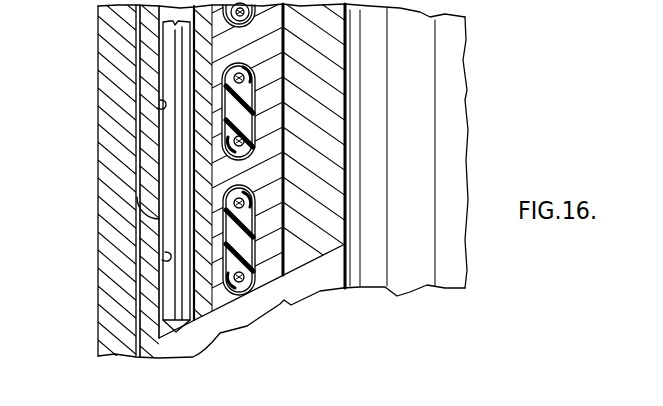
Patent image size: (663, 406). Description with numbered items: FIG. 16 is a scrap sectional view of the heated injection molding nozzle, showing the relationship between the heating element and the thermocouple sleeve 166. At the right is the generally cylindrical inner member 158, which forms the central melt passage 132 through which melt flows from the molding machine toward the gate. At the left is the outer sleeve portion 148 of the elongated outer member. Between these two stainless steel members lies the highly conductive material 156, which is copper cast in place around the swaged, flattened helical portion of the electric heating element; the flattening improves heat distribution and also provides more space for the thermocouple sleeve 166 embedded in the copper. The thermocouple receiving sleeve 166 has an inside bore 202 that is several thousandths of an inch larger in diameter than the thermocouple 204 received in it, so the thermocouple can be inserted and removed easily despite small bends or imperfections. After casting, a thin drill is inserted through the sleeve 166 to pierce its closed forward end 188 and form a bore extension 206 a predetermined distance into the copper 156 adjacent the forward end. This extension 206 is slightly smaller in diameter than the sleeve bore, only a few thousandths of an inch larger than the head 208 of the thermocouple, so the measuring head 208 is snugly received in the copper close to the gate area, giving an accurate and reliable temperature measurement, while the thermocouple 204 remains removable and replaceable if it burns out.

The outer sleeve portion 148 is at (105, 50).
The inside bore 202 is at (160, 100).
The thermocouple sleeve 166 is at (170, 157).
The thermocouple 204 is at (160, 170).
The closed forward end 188 is at (153, 220).
The bore extension 206 is at (165, 252).
The head of the thermocouple 208 is at (168, 295).
The highly conductive material 156 is at (155, 350).
The inner member 158 is at (330, 39).
The melt passage 132 is at (444, 105).